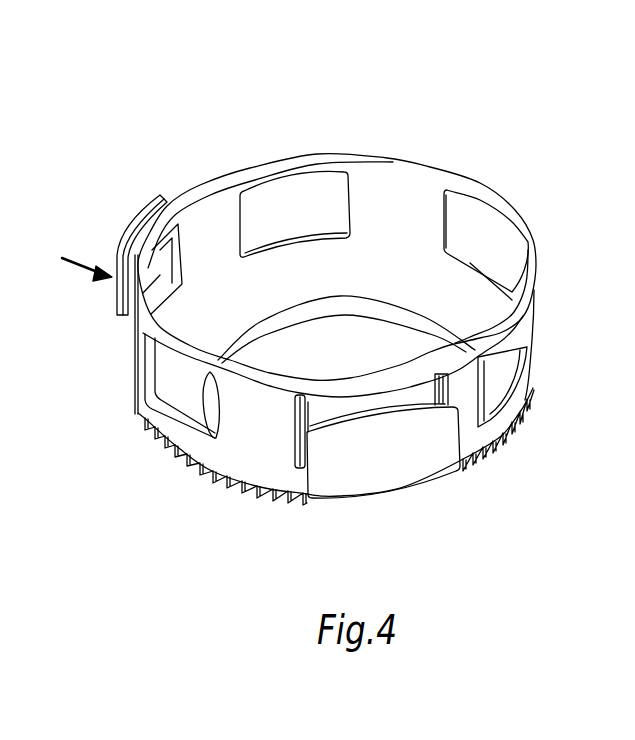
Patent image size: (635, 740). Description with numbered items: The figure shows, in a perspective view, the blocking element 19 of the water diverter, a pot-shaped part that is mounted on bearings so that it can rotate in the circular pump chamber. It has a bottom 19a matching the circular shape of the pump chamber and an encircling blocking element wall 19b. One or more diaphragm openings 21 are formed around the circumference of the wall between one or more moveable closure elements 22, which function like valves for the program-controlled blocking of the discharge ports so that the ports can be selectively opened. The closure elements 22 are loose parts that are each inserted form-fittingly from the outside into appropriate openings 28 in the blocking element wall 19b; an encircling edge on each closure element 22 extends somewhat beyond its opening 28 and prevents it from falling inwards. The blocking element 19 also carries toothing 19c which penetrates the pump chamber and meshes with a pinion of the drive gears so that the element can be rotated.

The blocking element 19 is at (314, 81).
The bottom 19a is at (210, 455).
The blocking element wall 19b is at (392, 178).
The toothing 19c is at (510, 428).
The diaphragm openings 21 is at (172, 363).
The closure elements 22 is at (127, 240).
The openings 28 is at (178, 292).